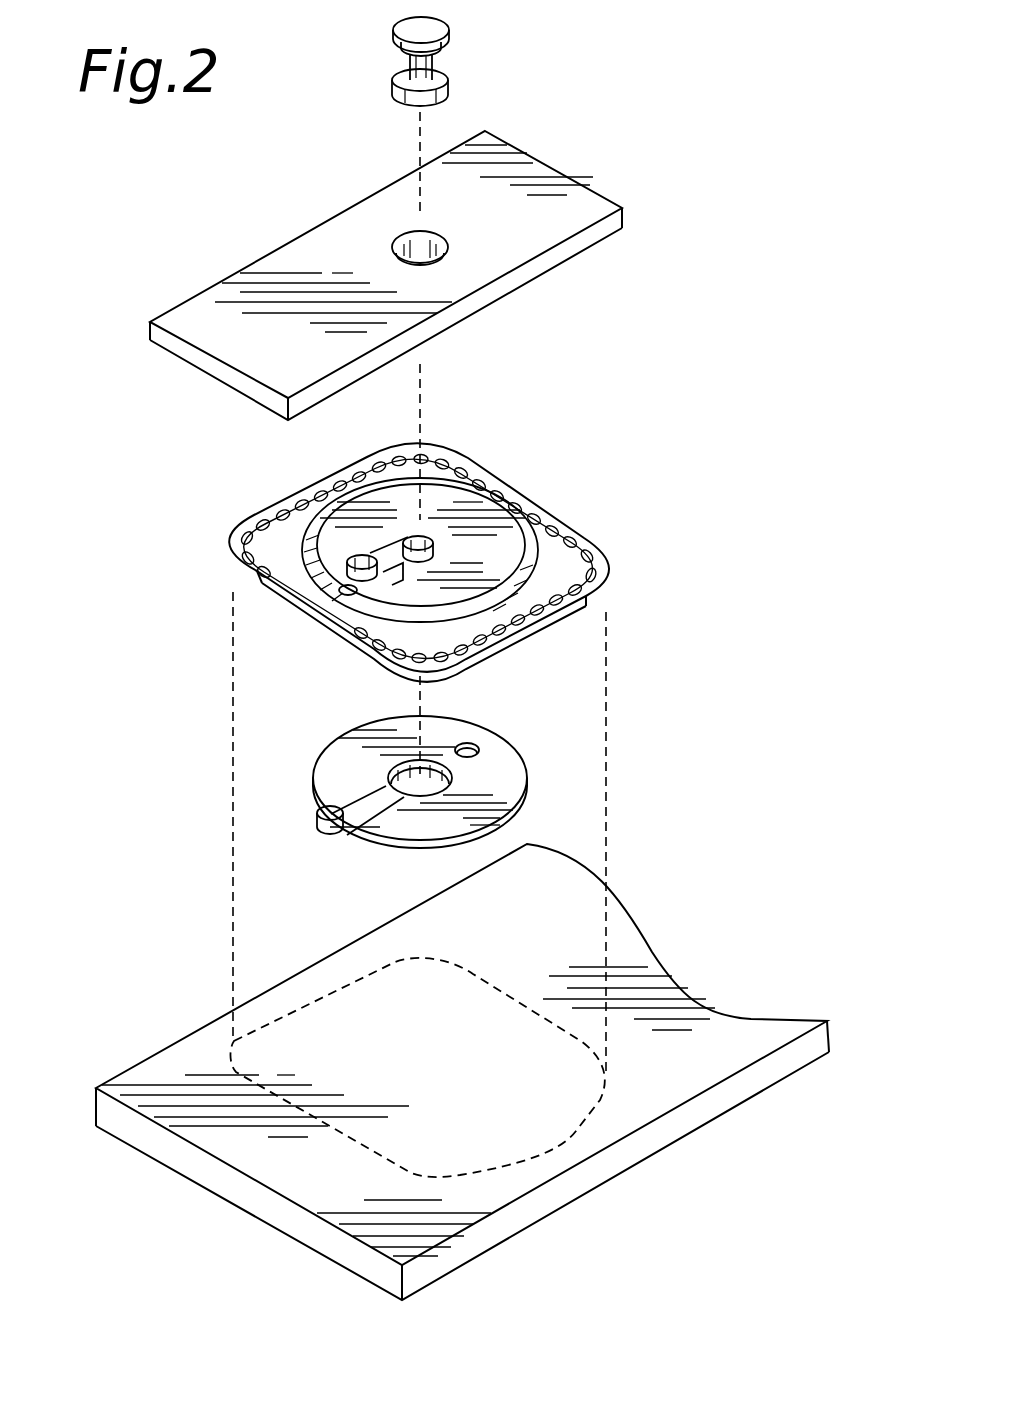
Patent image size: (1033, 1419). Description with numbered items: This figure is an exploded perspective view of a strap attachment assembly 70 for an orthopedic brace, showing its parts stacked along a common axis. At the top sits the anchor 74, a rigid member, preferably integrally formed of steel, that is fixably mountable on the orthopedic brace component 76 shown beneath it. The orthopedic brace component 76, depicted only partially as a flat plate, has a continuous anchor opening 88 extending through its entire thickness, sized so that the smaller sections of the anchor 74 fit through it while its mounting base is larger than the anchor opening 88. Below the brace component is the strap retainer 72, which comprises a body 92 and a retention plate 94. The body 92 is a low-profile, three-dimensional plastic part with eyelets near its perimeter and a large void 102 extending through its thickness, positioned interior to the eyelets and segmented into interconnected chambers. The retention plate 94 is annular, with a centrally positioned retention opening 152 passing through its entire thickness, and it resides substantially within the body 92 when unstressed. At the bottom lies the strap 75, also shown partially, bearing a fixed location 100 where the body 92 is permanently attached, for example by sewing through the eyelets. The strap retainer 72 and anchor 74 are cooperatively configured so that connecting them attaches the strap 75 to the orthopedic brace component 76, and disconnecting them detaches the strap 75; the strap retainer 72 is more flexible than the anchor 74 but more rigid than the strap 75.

The strap attachment assembly 70 is at (653, 110).
The strap retainer 72 is at (266, 653).
The anchor 74 is at (427, 33).
The strap 75 is at (625, 912).
The orthopedic brace component 76 is at (523, 180).
The anchor opening 88 is at (418, 241).
The body 92 is at (507, 491).
The retention plate 94 is at (473, 736).
The fixed location 100 is at (523, 1122).
The void 102 is at (366, 558).
The retention opening 152 is at (390, 775).